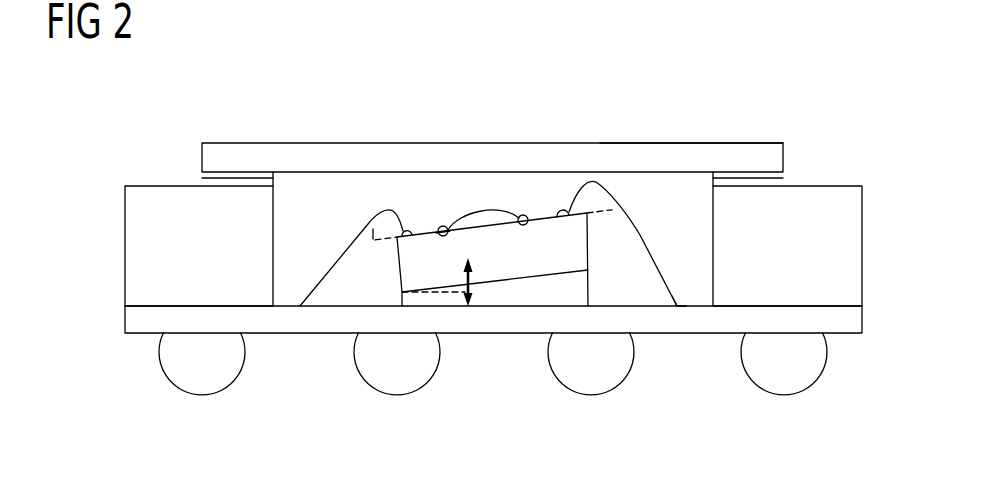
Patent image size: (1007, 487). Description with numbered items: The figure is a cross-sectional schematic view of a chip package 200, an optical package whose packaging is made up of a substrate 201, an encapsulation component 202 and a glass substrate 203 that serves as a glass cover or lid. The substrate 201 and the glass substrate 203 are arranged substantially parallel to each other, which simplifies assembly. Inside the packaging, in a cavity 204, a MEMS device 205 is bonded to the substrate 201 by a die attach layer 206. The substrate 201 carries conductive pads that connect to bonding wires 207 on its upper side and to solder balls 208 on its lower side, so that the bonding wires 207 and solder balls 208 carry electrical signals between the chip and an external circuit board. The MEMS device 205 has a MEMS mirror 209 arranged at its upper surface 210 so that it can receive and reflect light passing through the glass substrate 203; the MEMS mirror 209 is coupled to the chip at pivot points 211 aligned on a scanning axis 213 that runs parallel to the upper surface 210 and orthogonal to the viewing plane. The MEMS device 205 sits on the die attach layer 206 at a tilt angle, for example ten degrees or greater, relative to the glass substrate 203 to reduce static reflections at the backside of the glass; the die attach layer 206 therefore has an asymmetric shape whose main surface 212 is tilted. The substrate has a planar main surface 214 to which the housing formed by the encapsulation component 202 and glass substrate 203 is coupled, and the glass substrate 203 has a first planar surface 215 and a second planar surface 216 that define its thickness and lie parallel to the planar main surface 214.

The chip package 200 is at (779, 79).
The substrate 201 is at (125, 320).
The encapsulation component 202 is at (125, 243).
The glass substrate 203 is at (202, 157).
The cavity 204 is at (298, 186).
The MEMS device 205 is at (402, 273).
The die attach layer 206 is at (491, 300).
The bonding wires 207 is at (594, 180).
The solder balls 208 is at (781, 385).
The MEMS mirror 209 is at (477, 210).
The upper surface 210 is at (440, 230).
The pivot points 211 is at (442, 226).
The main surface 212 is at (572, 276).
The scanning axis 213 is at (366, 233).
The planar main surface 214 is at (700, 305).
The first planar surface 215 is at (718, 143).
The second planar surface 216 is at (690, 172).